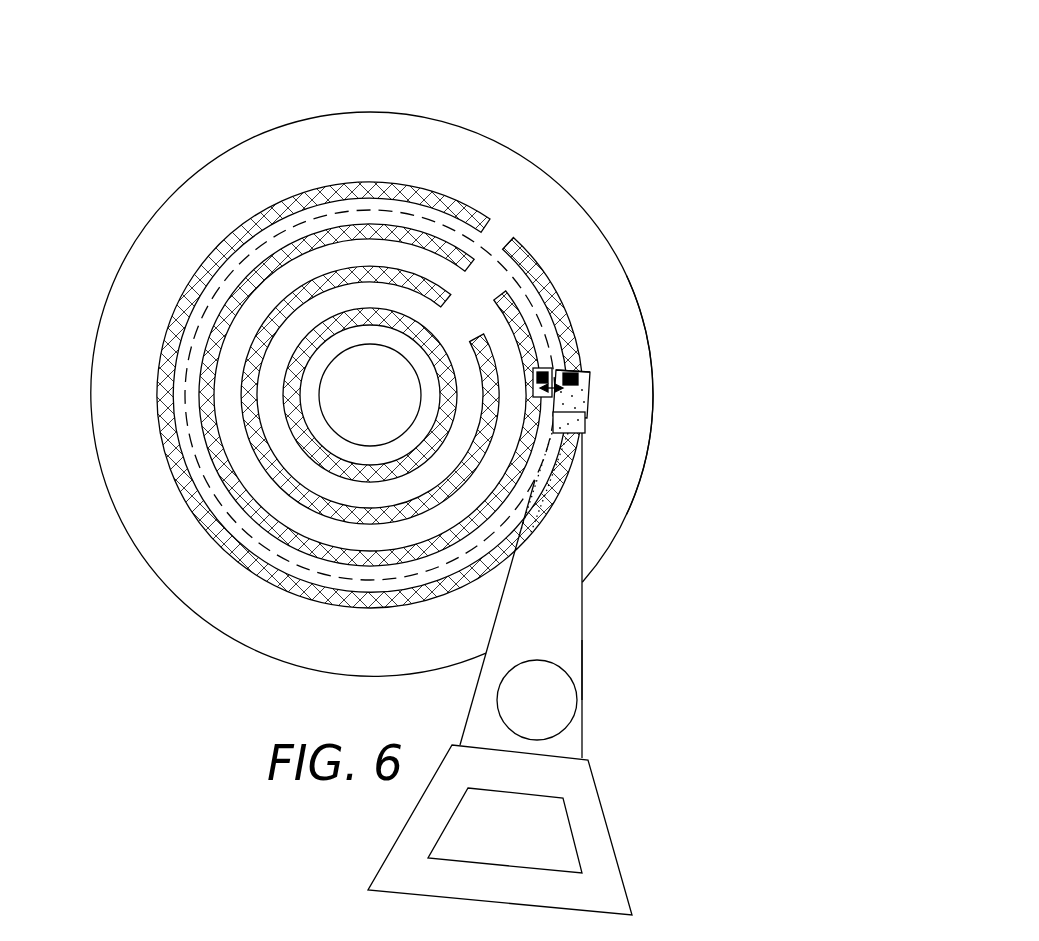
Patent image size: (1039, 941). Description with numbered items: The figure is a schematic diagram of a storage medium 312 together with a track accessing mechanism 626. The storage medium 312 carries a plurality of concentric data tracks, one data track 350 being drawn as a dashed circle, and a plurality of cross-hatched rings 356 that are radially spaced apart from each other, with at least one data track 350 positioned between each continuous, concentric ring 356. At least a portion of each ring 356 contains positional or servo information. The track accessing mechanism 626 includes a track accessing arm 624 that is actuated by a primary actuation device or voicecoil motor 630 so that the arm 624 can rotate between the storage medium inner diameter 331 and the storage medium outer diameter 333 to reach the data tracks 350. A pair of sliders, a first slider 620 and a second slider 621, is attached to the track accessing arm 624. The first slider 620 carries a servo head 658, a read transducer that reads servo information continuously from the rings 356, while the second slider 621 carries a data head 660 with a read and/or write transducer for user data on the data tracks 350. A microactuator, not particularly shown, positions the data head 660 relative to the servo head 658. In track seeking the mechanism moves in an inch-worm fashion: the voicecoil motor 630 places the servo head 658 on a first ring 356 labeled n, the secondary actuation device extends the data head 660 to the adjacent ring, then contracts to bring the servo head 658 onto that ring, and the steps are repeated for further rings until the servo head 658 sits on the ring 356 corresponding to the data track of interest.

The storage medium 312 is at (530, 157).
The storage medium outer diameter 333 is at (648, 455).
The rings 356 is at (203, 353).
The data track 350 is at (417, 205).
The storage medium inner diameter 331 is at (415, 418).
The first ring n is at (503, 233).
The track accessing arm 624 is at (555, 607).
The track accessing mechanism 626 is at (596, 665).
The voicecoil motor 630 is at (608, 826).
The first slider 620 is at (590, 392).
The servo head 658 is at (580, 367).
The data head 660 is at (567, 368).
The second slider 621 is at (542, 368).